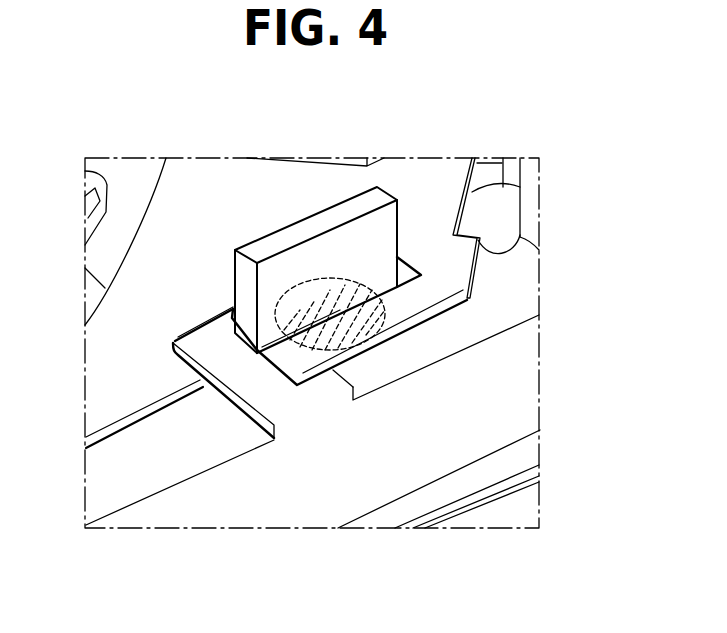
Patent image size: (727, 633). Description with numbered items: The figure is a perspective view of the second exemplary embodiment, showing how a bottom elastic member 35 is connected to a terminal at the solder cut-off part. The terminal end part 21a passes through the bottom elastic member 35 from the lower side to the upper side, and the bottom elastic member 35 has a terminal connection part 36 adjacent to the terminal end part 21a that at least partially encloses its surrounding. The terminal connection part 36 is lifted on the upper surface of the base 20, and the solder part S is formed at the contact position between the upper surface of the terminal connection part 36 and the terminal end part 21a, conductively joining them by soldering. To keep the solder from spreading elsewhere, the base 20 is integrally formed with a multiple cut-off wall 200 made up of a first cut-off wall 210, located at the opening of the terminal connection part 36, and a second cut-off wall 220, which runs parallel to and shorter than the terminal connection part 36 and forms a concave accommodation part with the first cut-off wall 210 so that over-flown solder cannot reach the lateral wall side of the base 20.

The base 20 is at (497, 395).
The terminal end part 21a is at (363, 204).
The bottom elastic member 35 is at (139, 393).
The terminal connection part 36 is at (410, 296).
The solder part S is at (330, 292).
The multiple cut-off wall 200 is at (320, 445).
The first cut-off wall 210 is at (205, 332).
The second cut-off wall 220 is at (323, 392).